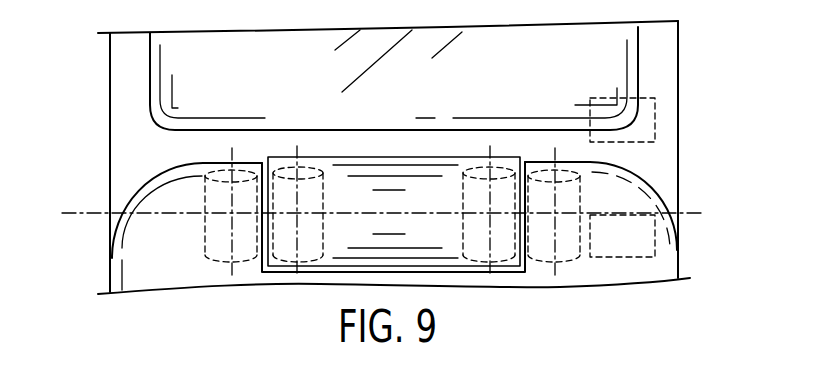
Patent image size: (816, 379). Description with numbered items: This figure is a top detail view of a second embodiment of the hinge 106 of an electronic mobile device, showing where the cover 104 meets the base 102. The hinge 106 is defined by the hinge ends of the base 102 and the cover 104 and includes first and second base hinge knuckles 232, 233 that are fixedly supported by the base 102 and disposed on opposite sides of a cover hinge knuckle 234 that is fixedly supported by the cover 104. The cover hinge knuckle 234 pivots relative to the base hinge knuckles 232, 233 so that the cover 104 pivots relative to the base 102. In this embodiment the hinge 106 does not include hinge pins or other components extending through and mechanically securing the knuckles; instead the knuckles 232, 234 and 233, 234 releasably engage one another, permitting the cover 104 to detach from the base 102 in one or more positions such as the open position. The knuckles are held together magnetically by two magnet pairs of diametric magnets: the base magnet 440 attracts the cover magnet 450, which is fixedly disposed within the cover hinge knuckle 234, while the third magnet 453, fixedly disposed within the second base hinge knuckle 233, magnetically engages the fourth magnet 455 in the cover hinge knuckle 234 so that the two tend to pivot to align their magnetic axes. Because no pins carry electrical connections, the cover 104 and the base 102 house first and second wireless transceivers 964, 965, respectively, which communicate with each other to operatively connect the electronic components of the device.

The base 102 is at (597, 278).
The cover 104 is at (661, 44).
The hinge 106 is at (694, 232).
The first base hinge knuckle 232 is at (140, 190).
The second base hinge knuckle 233 is at (645, 182).
The cover hinge knuckle 234 is at (317, 272).
The base magnet 440 is at (218, 262).
The cover magnet 450 is at (289, 165).
The third magnet 453 is at (545, 260).
The fourth magnet 455 is at (480, 165).
The first wireless transceiver 964 is at (672, 115).
The second wireless transceiver 965 is at (678, 249).